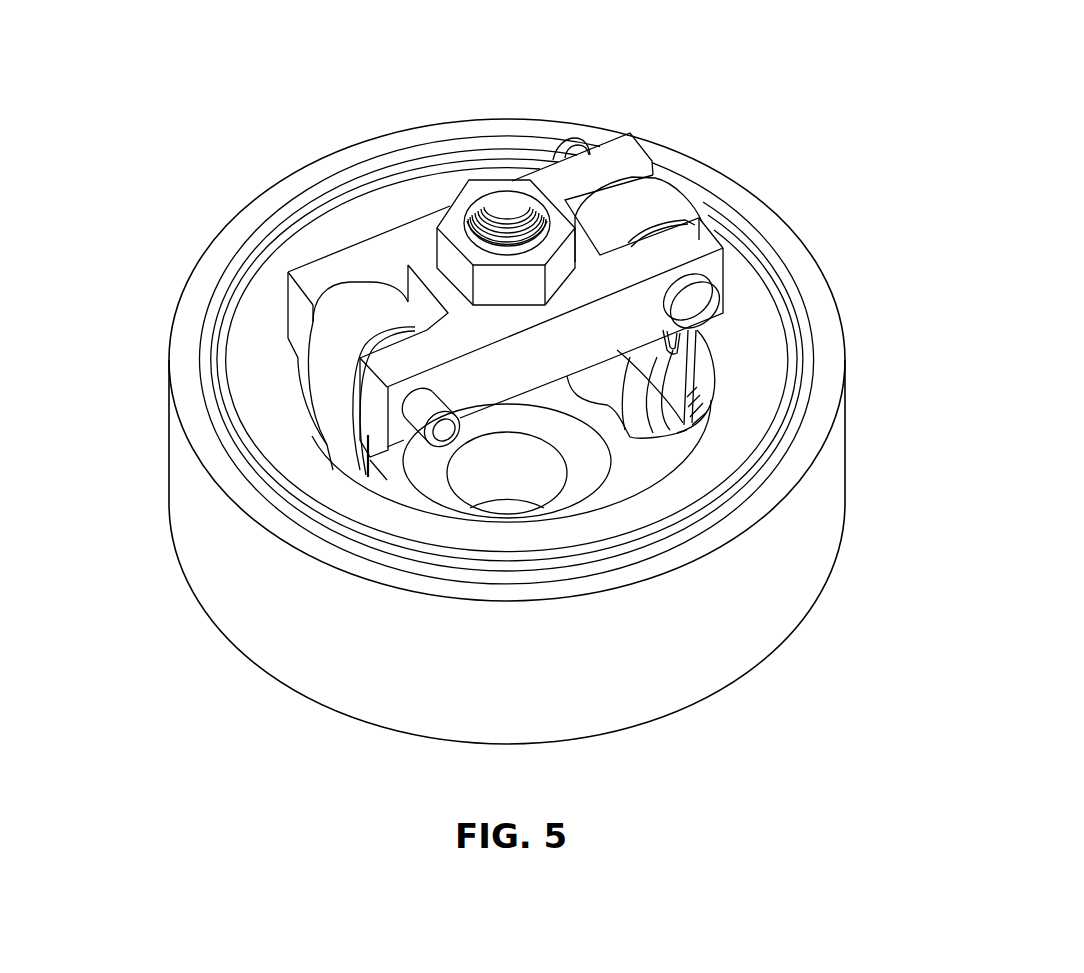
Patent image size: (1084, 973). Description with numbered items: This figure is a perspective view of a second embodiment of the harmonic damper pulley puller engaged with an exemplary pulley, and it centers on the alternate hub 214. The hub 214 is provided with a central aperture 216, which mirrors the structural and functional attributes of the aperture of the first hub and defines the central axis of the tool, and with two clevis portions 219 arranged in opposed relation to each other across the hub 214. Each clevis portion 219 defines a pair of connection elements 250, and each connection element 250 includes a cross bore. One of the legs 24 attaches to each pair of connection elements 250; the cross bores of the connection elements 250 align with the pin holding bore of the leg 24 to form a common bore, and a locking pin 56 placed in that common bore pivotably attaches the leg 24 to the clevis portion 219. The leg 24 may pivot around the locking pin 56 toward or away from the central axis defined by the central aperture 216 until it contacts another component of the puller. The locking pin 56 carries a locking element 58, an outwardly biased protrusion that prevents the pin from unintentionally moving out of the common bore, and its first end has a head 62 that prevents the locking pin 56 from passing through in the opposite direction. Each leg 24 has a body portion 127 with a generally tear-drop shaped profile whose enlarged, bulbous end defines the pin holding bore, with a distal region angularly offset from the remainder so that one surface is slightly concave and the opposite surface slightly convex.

The leg 24 is at (707, 358).
The locking pin 56 is at (422, 415).
The locking element 58 is at (568, 139).
The head 62 is at (698, 298).
The body portion 127 is at (670, 388).
The hub 214 is at (619, 120).
The central aperture 216 is at (495, 218).
The clevis portion 219 is at (665, 135).
The connection element 250 is at (310, 275).